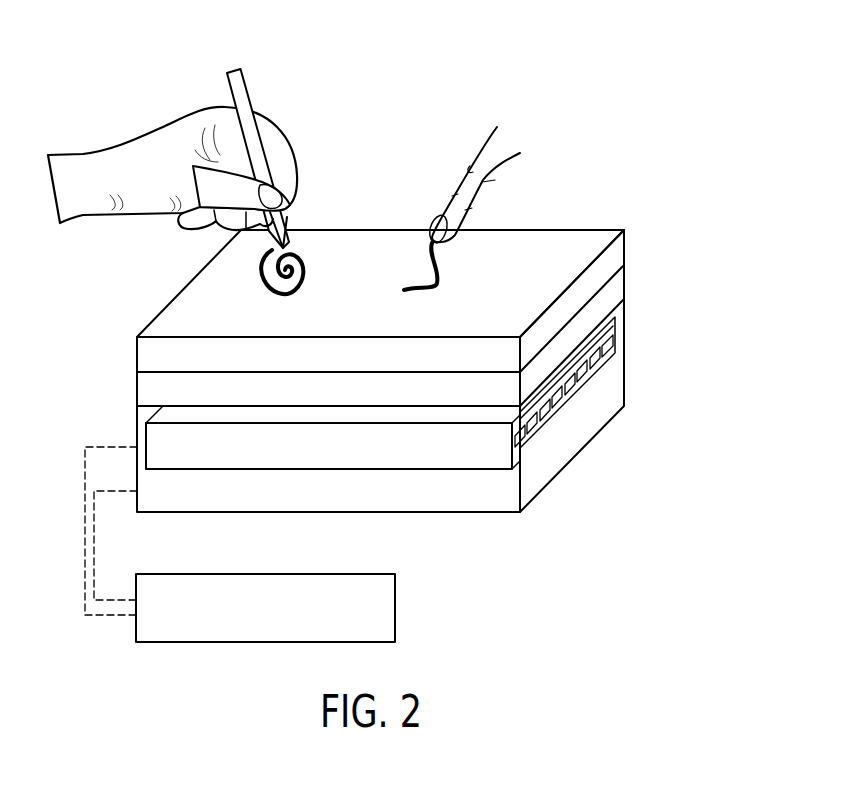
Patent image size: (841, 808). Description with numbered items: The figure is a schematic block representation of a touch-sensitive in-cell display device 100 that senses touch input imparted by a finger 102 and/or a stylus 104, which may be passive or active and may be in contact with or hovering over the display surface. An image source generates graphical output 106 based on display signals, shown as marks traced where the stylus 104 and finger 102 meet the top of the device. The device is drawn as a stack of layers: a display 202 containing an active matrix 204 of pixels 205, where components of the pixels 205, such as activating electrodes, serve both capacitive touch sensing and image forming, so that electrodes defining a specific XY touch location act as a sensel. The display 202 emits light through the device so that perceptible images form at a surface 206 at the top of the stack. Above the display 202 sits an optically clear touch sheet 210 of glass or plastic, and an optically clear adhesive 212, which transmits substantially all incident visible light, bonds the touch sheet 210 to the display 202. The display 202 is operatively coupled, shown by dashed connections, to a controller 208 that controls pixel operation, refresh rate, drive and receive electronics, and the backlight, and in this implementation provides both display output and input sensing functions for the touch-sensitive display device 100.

The touch-sensitive display device 100 is at (390, 52).
The finger 102 is at (482, 143).
The stylus 104 is at (248, 85).
The graphical output 106 is at (304, 264).
The display 202 is at (386, 503).
The active matrix 204 is at (417, 457).
The pixels 205 is at (640, 333).
The surface 206 is at (588, 242).
The controller 208 is at (348, 621).
The touch sheet 210 is at (416, 366).
The optically clear adhesive 212 is at (381, 402).